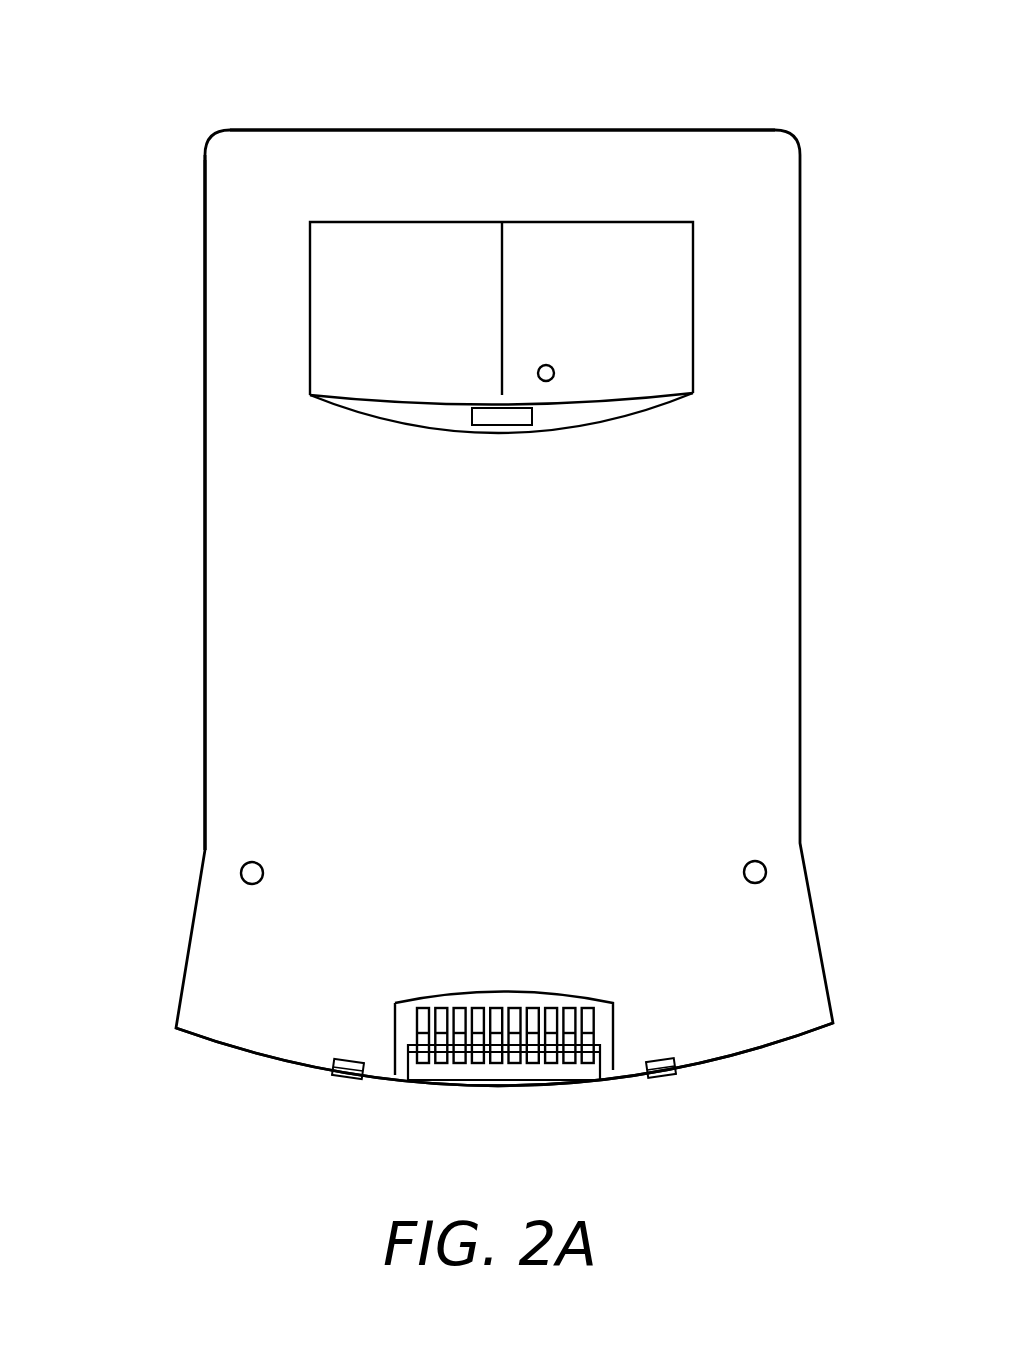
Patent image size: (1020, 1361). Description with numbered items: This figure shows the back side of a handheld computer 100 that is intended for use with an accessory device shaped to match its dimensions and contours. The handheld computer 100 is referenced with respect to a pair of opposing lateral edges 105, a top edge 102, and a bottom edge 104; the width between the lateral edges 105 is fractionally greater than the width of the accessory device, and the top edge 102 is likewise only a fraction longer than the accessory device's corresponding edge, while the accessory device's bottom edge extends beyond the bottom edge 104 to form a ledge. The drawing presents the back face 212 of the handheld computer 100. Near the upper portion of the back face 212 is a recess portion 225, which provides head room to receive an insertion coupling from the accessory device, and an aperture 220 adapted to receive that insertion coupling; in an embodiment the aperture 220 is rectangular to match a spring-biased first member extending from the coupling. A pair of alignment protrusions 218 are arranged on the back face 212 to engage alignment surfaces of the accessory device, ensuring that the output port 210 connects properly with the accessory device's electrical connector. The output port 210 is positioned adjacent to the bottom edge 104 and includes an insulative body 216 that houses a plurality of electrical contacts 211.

The handheld computer 100 is at (730, 78).
The top edge 102 is at (365, 130).
The bottom edge 104 is at (762, 1053).
The lateral edges 105 is at (205, 428).
The back face 212 is at (250, 270).
The recess portion 225 is at (672, 283).
The aperture 220 is at (597, 425).
The alignment protrusions 218 is at (241, 870).
The output port 210 is at (443, 1093).
The insulative body 216 is at (488, 998).
The electrical contacts 211 is at (525, 1063).